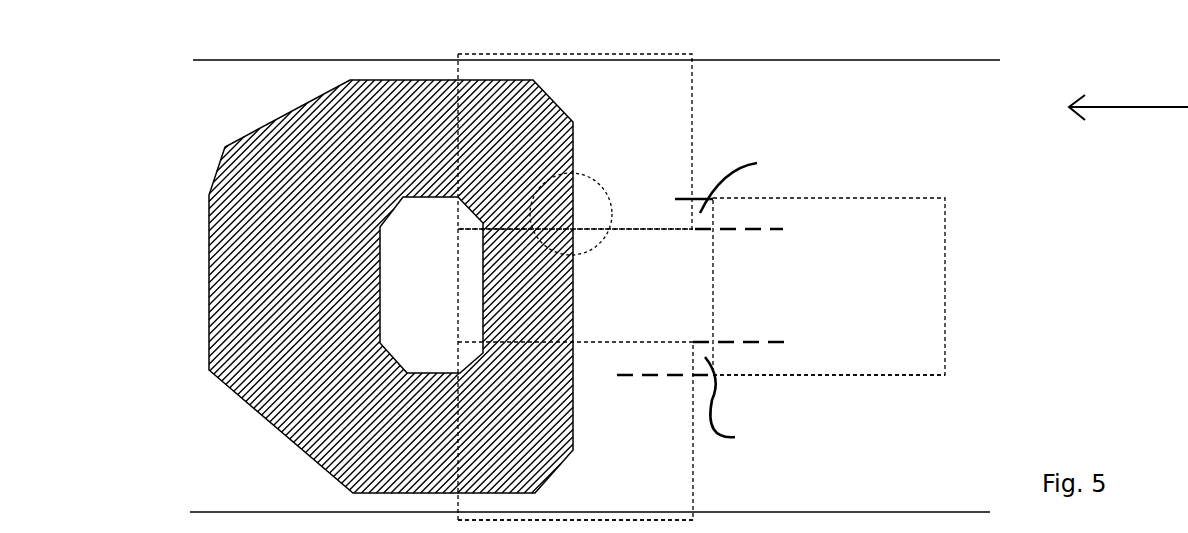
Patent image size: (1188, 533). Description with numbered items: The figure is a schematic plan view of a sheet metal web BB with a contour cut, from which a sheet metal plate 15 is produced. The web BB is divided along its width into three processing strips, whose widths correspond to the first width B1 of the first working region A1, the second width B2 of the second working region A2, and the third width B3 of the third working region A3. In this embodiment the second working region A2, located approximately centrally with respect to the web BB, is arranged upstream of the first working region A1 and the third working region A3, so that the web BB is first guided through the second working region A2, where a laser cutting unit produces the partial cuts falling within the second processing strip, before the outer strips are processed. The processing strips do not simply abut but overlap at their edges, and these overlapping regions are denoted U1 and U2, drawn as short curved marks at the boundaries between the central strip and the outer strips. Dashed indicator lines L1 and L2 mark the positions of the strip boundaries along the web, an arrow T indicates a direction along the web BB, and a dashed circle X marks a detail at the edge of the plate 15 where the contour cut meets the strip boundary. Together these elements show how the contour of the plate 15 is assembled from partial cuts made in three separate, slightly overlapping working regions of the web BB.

The sheet metal plate 15 is at (238, 180).
The sheet metal web BB is at (600, 286).
The direction arrow T is at (1128, 96).
The third width B3 is at (594, 287).
The first width B1 is at (575, 431).
The second width B2 is at (849, 286).
The third working region A3 is at (677, 191).
The first working region A1 is at (575, 502).
The second working region A2 is at (829, 353).
The length L1 is at (624, 286).
The length L2 is at (745, 392).
The overlapping region U1 is at (749, 174).
The overlapping region U2 is at (740, 402).
The detail X is at (571, 214).